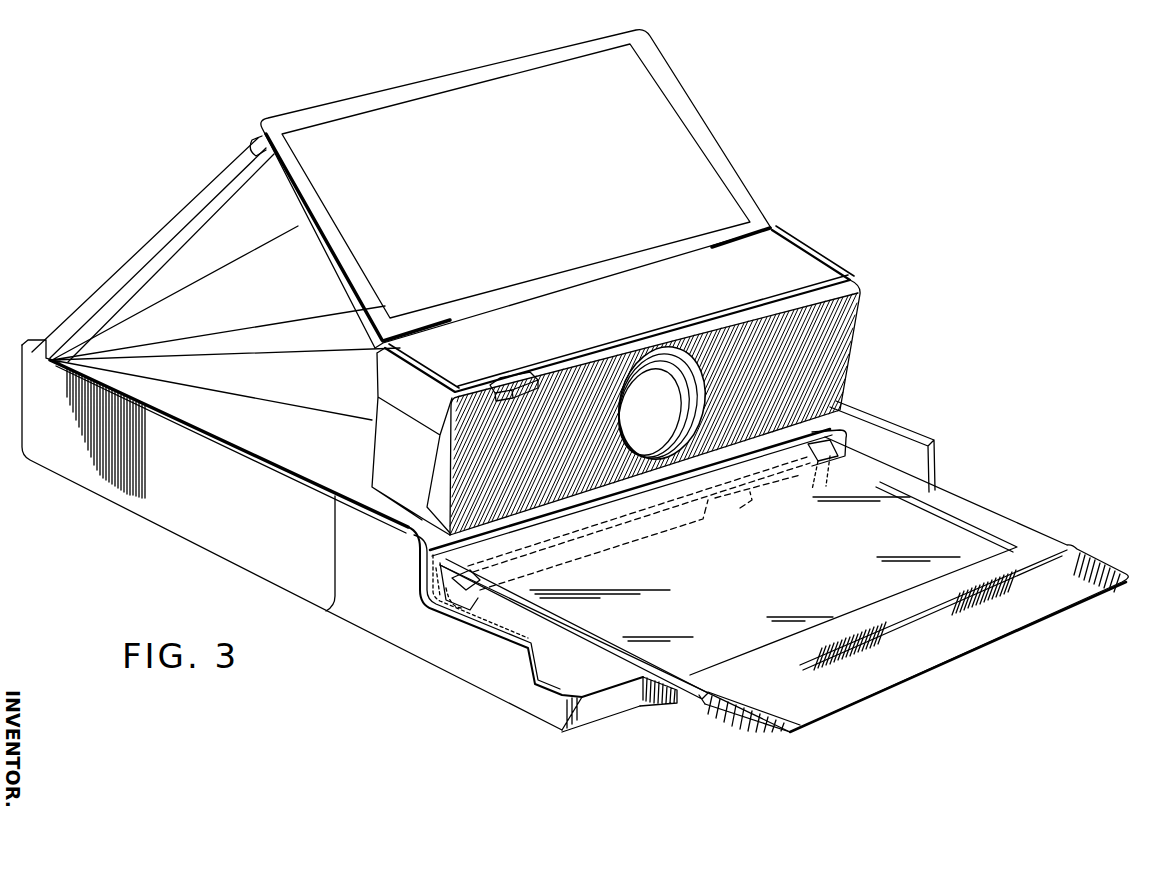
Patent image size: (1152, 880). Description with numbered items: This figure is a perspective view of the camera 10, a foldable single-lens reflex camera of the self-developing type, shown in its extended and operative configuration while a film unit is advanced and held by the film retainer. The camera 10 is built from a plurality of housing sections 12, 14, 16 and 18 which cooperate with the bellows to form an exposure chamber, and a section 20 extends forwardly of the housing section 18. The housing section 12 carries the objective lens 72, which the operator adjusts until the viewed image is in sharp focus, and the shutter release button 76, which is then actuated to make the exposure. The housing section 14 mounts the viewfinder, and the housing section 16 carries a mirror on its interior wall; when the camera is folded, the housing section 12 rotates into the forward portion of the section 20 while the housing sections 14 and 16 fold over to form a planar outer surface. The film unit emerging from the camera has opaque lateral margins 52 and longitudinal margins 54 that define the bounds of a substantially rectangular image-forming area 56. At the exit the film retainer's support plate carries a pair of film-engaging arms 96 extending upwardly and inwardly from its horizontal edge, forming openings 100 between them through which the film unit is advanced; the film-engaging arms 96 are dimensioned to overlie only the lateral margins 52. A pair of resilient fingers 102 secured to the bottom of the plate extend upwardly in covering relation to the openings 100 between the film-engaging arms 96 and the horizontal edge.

The camera 10 is at (938, 348).
The housing section 12 is at (826, 248).
The housing section 14 is at (727, 104).
The housing section 16 is at (120, 247).
The housing section 18 is at (64, 502).
The section 20 is at (553, 760).
The lateral margins 52 is at (966, 510).
The longitudinal margins 54 is at (872, 598).
The image-forming area 56 is at (758, 572).
The objective lens 72 is at (660, 372).
The shutter release button 76 is at (508, 382).
The film-engaging arms 96 is at (840, 440).
The openings 100 is at (828, 448).
The resilient fingers 102 is at (462, 596).